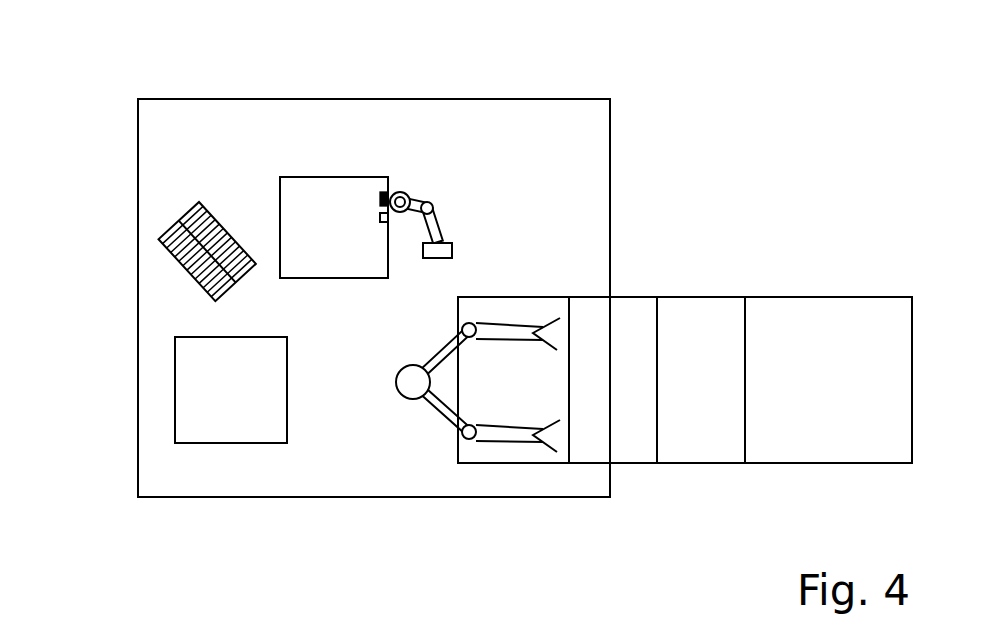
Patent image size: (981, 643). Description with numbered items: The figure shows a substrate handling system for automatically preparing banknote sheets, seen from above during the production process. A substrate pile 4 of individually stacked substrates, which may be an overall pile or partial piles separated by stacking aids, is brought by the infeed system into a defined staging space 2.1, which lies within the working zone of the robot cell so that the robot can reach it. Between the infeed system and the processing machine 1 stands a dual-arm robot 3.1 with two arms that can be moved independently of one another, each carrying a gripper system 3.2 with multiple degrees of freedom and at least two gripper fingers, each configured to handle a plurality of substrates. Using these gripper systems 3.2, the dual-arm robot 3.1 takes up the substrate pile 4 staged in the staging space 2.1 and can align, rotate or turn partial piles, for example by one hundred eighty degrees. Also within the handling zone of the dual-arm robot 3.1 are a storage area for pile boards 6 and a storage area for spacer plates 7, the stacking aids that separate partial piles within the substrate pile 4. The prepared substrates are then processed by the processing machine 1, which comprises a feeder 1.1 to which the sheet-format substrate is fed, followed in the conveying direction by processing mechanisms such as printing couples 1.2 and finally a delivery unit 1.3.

The processing machine 1 is at (685, 296).
The feeder 1.1 is at (614, 380).
The printing couples 1.2 is at (701, 380).
The delivery unit 1.3 is at (828, 380).
The staging space 2.1 is at (335, 177).
The dual-arm robot 3.1 is at (410, 382).
The gripper systems 3.2 is at (558, 320).
The substrate pile 4 is at (304, 160).
The pile boards 6 is at (169, 432).
The spacer plates 7 is at (145, 224).